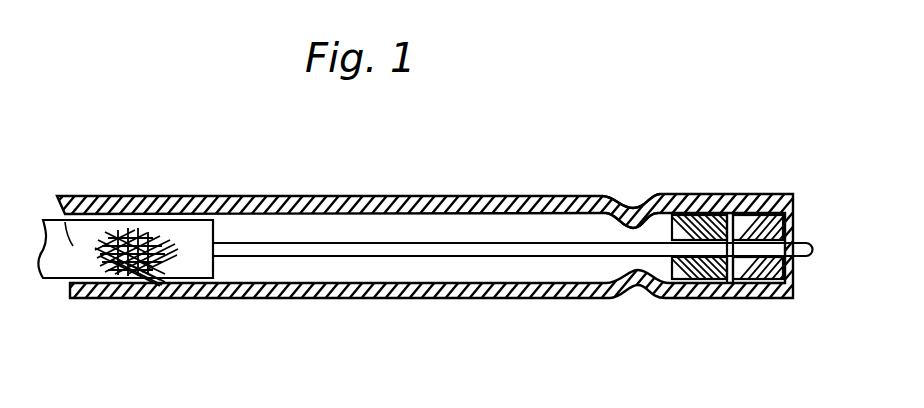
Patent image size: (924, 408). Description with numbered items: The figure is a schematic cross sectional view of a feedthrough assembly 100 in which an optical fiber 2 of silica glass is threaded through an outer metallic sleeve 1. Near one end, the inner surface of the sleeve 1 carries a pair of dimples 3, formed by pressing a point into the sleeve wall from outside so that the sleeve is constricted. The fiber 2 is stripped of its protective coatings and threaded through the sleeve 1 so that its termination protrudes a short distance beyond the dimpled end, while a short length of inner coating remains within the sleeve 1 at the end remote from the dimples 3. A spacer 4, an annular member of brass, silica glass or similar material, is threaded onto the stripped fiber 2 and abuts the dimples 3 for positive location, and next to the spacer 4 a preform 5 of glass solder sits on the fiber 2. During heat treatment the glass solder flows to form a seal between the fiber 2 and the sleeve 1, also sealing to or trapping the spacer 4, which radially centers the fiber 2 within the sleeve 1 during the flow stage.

The feedthrough assembly 100 is at (160, 156).
The outer metallic sleeve 1 is at (393, 195).
The optical fiber 2 is at (813, 249).
The dimples 3 is at (637, 206).
The spacer 4 is at (698, 195).
The preform 5 is at (763, 282).